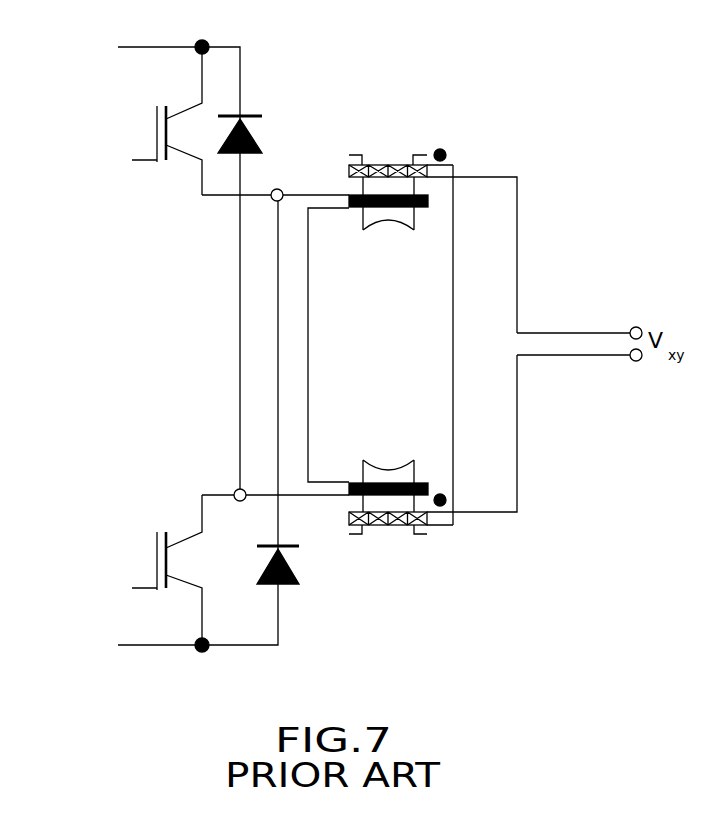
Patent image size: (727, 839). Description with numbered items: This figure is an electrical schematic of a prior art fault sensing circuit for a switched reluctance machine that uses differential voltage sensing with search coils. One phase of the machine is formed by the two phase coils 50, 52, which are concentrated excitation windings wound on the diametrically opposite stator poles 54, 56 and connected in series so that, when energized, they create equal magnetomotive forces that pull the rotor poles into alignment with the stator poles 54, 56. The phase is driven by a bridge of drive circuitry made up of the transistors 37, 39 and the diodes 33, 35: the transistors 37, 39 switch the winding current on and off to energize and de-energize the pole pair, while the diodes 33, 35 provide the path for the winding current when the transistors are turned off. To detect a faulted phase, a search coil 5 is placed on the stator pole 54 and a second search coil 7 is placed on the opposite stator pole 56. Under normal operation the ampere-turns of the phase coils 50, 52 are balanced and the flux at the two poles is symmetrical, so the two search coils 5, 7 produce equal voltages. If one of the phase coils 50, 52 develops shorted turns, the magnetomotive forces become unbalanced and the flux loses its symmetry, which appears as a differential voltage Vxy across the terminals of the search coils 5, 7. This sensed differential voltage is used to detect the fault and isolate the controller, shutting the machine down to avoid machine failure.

The search coil 5 is at (408, 164).
The search coil 7 is at (418, 527).
The diode 33 is at (299, 585).
The diode 35 is at (258, 137).
The transistor 37 is at (155, 140).
The transistor 39 is at (155, 570).
The phase coil 50 is at (428, 208).
The phase coil 52 is at (427, 482).
The stator pole 54 is at (368, 190).
The stator pole 56 is at (372, 504).